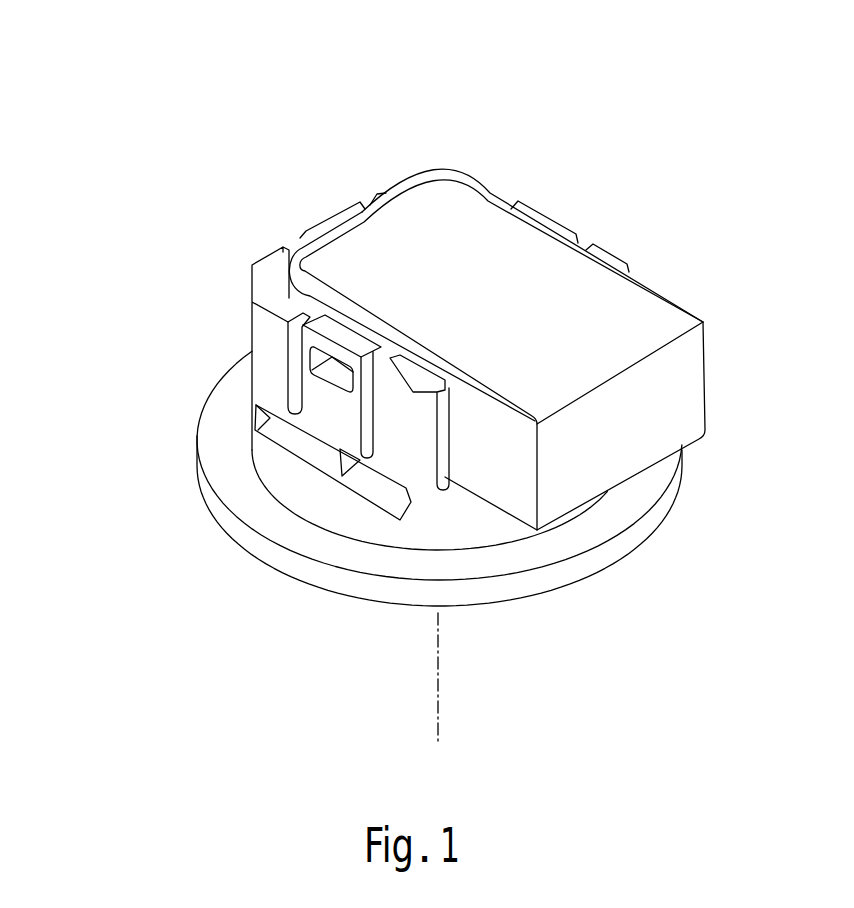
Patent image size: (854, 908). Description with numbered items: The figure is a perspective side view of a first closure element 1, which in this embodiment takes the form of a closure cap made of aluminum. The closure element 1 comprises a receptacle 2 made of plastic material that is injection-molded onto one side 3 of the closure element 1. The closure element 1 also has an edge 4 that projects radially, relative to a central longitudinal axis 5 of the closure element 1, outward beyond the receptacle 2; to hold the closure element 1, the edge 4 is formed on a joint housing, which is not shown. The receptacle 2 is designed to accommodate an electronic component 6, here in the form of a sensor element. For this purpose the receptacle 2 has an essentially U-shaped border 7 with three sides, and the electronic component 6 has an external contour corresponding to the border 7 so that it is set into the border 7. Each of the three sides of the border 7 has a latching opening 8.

The closure element 1 is at (150, 268).
The receptacle 2 is at (489, 140).
The side 3 is at (239, 412).
The edge 4 is at (190, 476).
The central longitudinal axis 5 is at (440, 672).
The electronic component 6 is at (628, 310).
The border 7 is at (244, 262).
The latching opening 8 is at (318, 204).